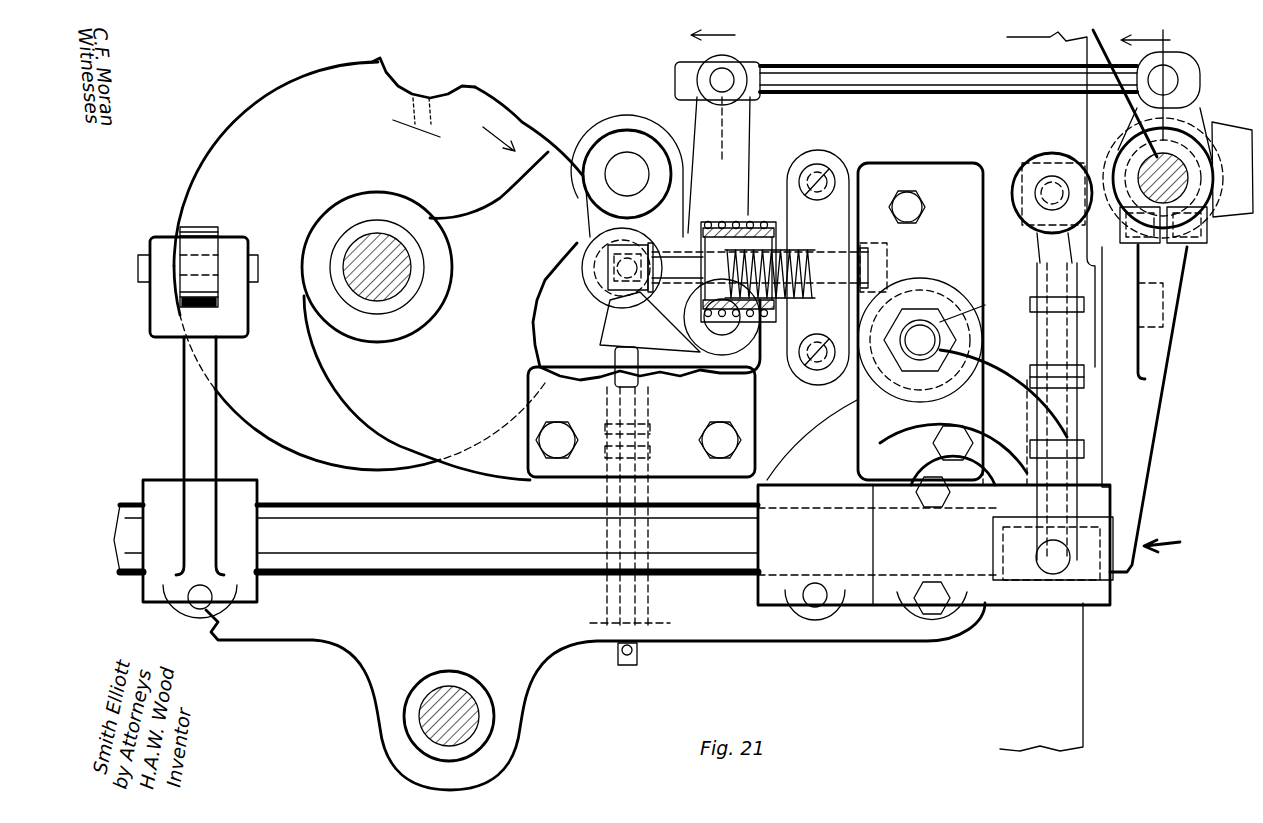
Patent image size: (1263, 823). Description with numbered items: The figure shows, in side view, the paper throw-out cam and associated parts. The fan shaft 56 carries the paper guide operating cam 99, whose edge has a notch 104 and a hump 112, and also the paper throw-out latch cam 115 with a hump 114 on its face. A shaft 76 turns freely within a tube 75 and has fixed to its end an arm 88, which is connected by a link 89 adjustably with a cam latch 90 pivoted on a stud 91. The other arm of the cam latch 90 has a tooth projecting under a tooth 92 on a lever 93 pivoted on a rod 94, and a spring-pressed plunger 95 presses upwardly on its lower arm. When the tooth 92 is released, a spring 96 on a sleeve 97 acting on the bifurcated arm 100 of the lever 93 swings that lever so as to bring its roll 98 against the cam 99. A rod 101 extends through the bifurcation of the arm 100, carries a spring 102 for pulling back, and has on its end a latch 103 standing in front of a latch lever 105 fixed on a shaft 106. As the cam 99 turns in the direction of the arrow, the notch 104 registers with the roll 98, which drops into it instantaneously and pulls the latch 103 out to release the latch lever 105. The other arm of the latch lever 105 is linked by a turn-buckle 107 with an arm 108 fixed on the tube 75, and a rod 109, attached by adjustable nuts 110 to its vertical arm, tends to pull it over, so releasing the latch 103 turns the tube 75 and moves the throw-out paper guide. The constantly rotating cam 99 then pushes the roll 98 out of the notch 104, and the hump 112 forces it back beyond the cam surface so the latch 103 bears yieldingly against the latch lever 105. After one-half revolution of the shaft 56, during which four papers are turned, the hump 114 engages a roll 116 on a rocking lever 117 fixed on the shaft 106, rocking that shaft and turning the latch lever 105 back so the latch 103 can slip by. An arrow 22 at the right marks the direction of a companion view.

The section line 22 is at (1175, 538).
The fan shaft 56 is at (377, 267).
The tube 75 is at (1133, 132).
The shaft 76 is at (1164, 172).
The arm 88 is at (1193, 103).
The link 89 is at (910, 73).
The cam latch 90 is at (740, 121).
The stud 91 is at (732, 323).
The tooth 92 is at (652, 318).
The lever 93 is at (609, 146).
The rod 94 is at (627, 174).
The spring-pressed plunger 95 is at (616, 368).
The spring 96 is at (727, 222).
The sleeve 97 is at (757, 221).
The roll 98 is at (646, 304).
The cam 99 is at (470, 101).
The bifurcated arm 100 is at (673, 236).
The rod 101 is at (761, 267).
The spring 102 is at (790, 254).
The latch 103 is at (862, 256).
The notch 104 is at (447, 97).
The latch lever 105 is at (883, 272).
The shaft 106 is at (527, 547).
The turn-buckle 107 is at (1035, 346).
The arm 108 is at (1058, 150).
The rod 109 is at (920, 340).
The nuts 110 is at (982, 307).
The hump 112 is at (400, 66).
The hump 114 is at (415, 127).
The paper throw-out latch cam 115 is at (258, 108).
The roll 116 is at (208, 234).
The rocking lever 117 is at (190, 412).